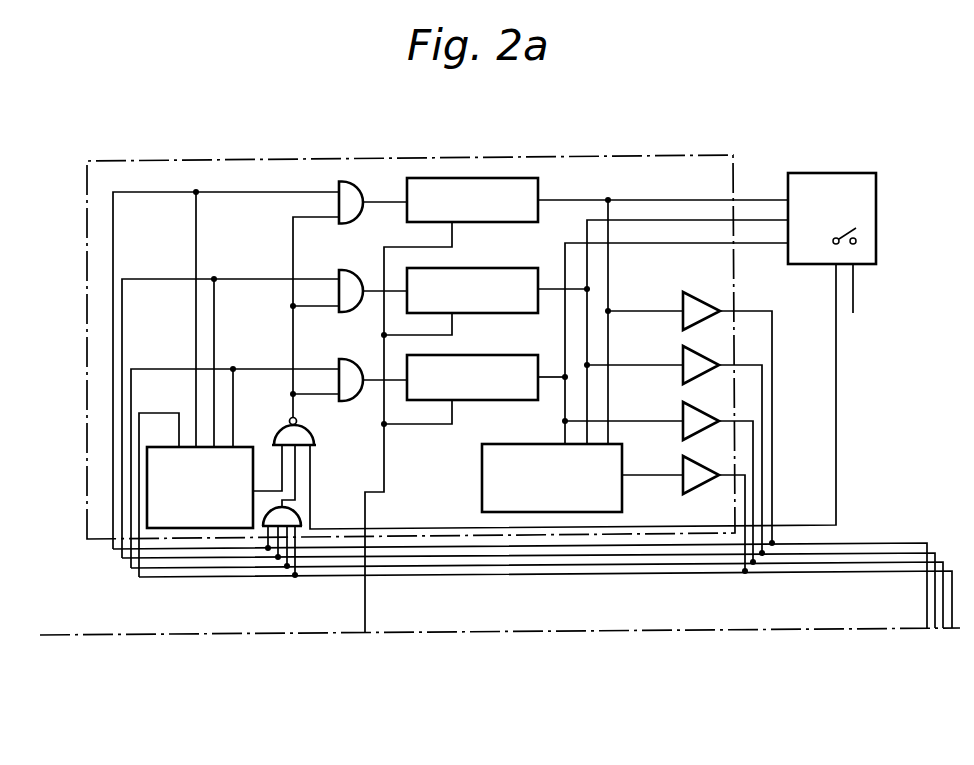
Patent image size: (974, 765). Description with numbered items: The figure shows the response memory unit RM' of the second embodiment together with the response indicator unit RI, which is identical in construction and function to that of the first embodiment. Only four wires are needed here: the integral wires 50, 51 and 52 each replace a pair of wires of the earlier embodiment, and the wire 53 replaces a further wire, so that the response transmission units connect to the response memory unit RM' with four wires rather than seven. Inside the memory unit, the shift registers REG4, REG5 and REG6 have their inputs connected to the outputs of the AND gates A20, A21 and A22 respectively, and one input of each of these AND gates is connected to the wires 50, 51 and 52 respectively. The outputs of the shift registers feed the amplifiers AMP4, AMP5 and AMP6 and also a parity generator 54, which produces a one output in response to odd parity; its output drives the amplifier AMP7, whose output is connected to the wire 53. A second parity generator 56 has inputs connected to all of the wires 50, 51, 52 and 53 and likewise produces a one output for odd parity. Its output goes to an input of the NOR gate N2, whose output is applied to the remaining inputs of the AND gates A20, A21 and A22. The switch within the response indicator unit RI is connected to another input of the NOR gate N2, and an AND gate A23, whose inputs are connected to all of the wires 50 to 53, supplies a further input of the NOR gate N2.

The wire 50 is at (860, 542).
The wire 51 is at (877, 552).
The wire 52 is at (895, 561).
The wire 53 is at (915, 570).
The parity generator 54 is at (482, 479).
The parity generator 56 is at (210, 528).
The AND gate A20 is at (358, 189).
The AND gate A21 is at (348, 270).
The AND gate A22 is at (351, 359).
The AND gate A23 is at (303, 517).
The NOR gate N2 is at (314, 439).
The amplifier AMP4 is at (683, 301).
The amplifier AMP5 is at (683, 357).
The amplifier AMP6 is at (683, 411).
The amplifier AMP7 is at (683, 464).
The shift register REG4 is at (472, 200).
The shift register REG5 is at (472, 290).
The shift register REG6 is at (472, 377).
The response indicator unit RI is at (876, 209).
The response memory unit RM' is at (411, 331).